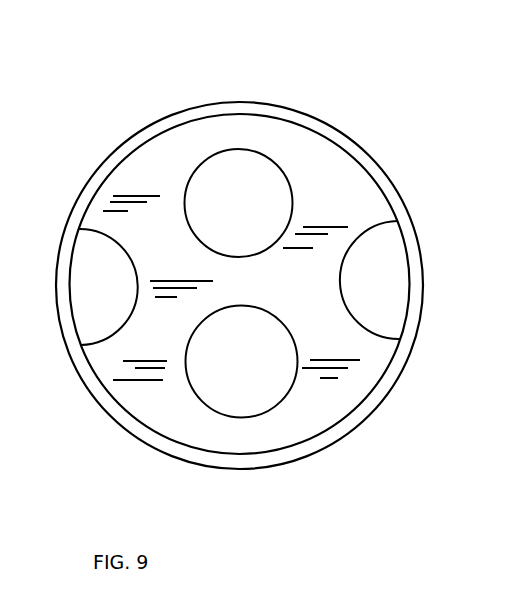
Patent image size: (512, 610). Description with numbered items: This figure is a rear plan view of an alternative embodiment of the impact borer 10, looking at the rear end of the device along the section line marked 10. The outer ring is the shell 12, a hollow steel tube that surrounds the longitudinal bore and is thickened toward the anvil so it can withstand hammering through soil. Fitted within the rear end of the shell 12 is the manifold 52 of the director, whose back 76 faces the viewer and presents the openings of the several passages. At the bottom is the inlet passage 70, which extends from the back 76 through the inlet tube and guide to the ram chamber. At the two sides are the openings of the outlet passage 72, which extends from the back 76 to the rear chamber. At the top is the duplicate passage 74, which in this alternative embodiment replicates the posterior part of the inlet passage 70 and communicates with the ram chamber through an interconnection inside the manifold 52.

The impact borer 10 is at (237, 101).
The shell 12 is at (122, 147).
The manifold 52 is at (327, 428).
The inlet passage 70 is at (222, 385).
The outlet passage 72 is at (90, 289).
The duplicate passage 74 is at (255, 183).
The back 76 is at (338, 190).